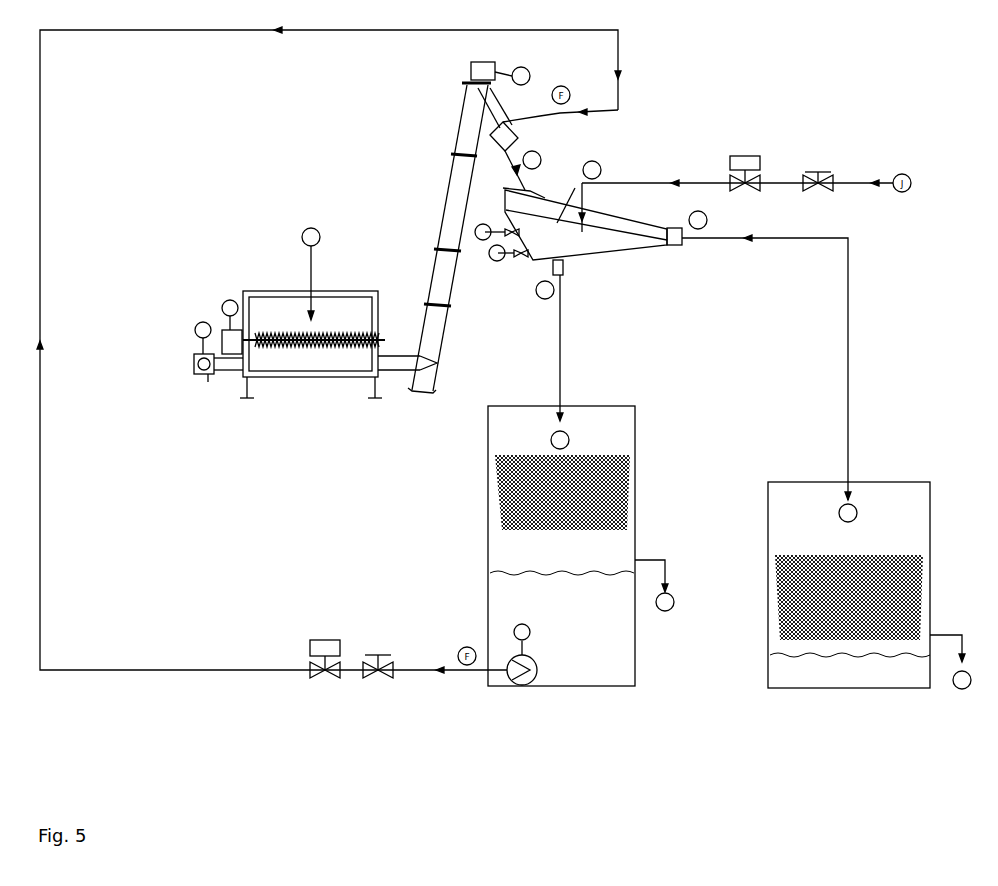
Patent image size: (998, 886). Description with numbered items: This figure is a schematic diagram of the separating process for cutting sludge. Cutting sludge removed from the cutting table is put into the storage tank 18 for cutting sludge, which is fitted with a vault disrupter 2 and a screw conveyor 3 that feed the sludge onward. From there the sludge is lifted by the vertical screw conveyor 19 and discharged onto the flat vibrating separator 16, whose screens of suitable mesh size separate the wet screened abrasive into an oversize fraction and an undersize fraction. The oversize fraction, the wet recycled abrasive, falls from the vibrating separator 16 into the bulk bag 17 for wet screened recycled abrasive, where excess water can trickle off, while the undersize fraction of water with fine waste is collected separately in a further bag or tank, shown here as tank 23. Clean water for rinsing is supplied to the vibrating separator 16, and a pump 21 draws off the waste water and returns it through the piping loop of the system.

The vault disrupter 2 is at (220, 318).
The screw conveyor 3 is at (204, 349).
The vibrating separator 16 is at (591, 230).
The bulk bag for wet screened recycled abrasive 17 is at (869, 585).
The storage tank for cutting sludge 18 is at (338, 313).
The vertical screw conveyor 19 is at (474, 227).
The pump 21 is at (534, 654).
The liquid tank 23 is at (581, 546).